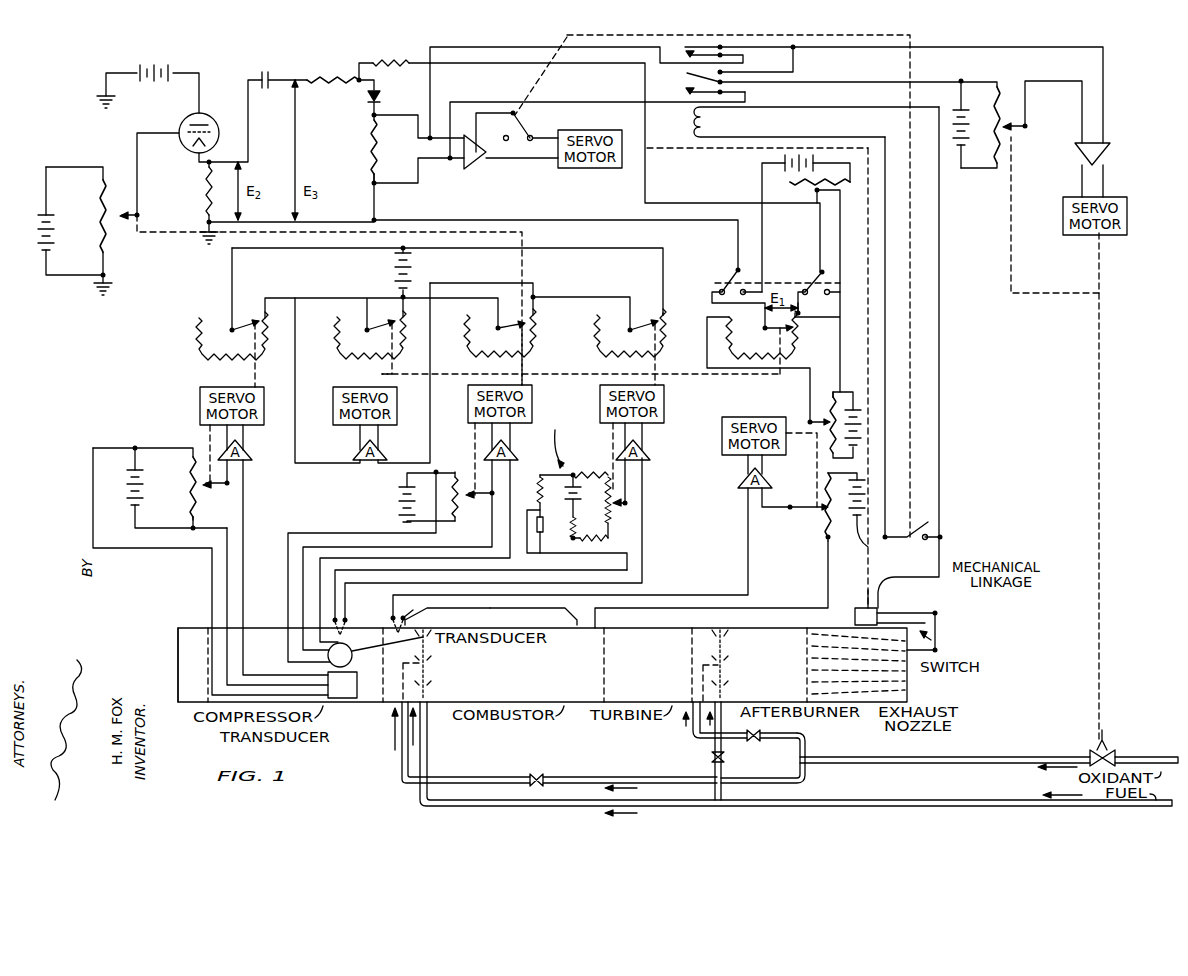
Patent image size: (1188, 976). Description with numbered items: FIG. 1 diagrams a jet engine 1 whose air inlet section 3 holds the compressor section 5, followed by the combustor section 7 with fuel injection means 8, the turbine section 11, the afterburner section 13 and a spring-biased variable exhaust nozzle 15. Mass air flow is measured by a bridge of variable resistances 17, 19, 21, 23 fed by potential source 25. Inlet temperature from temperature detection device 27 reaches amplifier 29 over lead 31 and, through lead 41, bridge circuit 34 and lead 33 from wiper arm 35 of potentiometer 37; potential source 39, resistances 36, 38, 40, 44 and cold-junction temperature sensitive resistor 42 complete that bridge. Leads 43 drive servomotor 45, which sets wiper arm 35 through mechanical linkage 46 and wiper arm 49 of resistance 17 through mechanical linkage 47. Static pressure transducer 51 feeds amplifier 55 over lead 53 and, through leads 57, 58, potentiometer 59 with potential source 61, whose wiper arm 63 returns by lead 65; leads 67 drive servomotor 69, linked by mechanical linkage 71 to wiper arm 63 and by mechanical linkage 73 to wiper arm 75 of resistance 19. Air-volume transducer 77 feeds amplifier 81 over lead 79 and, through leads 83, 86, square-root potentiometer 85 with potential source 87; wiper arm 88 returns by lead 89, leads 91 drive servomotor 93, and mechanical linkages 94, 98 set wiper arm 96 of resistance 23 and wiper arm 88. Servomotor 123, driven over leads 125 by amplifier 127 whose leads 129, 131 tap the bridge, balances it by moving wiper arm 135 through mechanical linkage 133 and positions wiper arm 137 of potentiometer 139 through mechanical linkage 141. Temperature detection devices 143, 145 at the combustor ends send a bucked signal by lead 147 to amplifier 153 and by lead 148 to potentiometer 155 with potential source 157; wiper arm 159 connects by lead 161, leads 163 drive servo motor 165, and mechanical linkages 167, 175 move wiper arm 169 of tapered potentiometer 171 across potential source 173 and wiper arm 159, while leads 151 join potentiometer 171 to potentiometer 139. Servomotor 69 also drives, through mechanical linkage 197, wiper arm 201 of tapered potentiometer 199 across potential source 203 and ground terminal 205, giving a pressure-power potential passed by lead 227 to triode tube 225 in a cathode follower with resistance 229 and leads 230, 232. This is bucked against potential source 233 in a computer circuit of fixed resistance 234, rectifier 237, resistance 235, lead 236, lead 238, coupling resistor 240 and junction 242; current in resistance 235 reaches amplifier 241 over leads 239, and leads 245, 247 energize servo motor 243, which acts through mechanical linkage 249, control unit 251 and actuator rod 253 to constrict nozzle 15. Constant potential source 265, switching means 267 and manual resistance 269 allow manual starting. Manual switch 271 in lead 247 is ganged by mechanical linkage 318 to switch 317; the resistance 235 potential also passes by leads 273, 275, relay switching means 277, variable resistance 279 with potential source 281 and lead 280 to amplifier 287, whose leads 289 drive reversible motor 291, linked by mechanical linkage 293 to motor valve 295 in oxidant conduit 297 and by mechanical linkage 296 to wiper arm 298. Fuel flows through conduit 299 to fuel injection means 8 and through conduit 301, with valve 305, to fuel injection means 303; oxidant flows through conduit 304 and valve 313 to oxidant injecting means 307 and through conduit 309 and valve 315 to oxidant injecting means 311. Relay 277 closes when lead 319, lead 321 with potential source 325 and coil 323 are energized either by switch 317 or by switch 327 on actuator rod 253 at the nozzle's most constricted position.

The jet engine 1 is at (694, 626).
The air inlet section 3 is at (195, 674).
The compressor section 5 is at (271, 674).
The combustor section 7 is at (527, 674).
The fuel injection means 8 is at (432, 657).
The turbine section 11 is at (647, 674).
The afterburner section 13 is at (789, 674).
The variable exhaust nozzle 15 is at (895, 648).
The variable resistance 17 is at (598, 350).
The variable resistance 19 is at (467, 350).
The variable resistance 21 is at (334, 350).
The variable resistance 23 is at (197, 351).
The potential source 25 is at (411, 260).
The temperature detection device 27 is at (347, 620).
The amplifier 29 is at (650, 456).
The lead 31 is at (642, 507).
The lead 33 is at (611, 504).
The bridge circuit 34 is at (566, 446).
The wiper arm 35 is at (620, 498).
The resistance 36 is at (543, 529).
The potentiometer 37 is at (577, 523).
The resistance 38 is at (582, 540).
The potential source 39 is at (573, 478).
The resistance 40 is at (590, 472).
The lead 41 is at (634, 550).
The temperature sensitive resistor 42 is at (577, 540).
The pair of leads 43 is at (641, 435).
The resistance 44 is at (540, 490).
The servomotor 45 is at (664, 385).
The mechanical linkage 46 is at (613, 450).
The mechanical linkage 47 is at (647, 358).
The wiper arm 49 is at (640, 332).
The resistance bridge strain gauge transducer 51 is at (350, 648).
The lead 53 is at (510, 480).
The amplifier 55 is at (515, 454).
The lead 57 is at (478, 547).
The lead 58 is at (383, 531).
The potentiometer 59 is at (478, 488).
The potential source 61 is at (407, 508).
The wiper arm 63 is at (458, 517).
The lead 65 is at (492, 495).
The pair of leads 67 is at (510, 435).
The servomotor 69 is at (532, 402).
The mechanical linkage 71 is at (475, 443).
The mechanical linkage 73 is at (522, 370).
The wiper arm 75 is at (509, 332).
The resistance bridge strain gauge transducer 77 is at (356, 672).
The lead 79 is at (243, 568).
The amplifier 81 is at (252, 457).
The lead 83 is at (226, 542).
The potentiometer 85 is at (189, 511).
The lead 86 is at (212, 600).
The potential source 87 is at (136, 512).
The wiper arm 88 is at (203, 502).
The lead 89 is at (228, 485).
The pair of leads 91 is at (245, 433).
The servomotor 93 is at (200, 398).
The mechanical linkage 94 is at (256, 369).
The wiper arm 96 is at (242, 335).
The mechanical linkage 98 is at (210, 426).
The servomotor 123 is at (344, 387).
The pair of leads 125 is at (360, 437).
The amplifier 127 is at (370, 473).
The lead 129 is at (295, 448).
The lead 131 is at (430, 450).
The mechanical linkage 133 is at (392, 368).
The wiper arm 135 is at (379, 335).
The wiper arm 137 is at (762, 342).
The potentiometer 139 is at (790, 352).
The mechanical linkage 141 is at (708, 376).
The temperature detection device 143 is at (406, 618).
The temperature detection device 145 is at (574, 618).
The lead 147 is at (748, 592).
The lead 148 is at (828, 593).
The leads 151 is at (840, 340).
The amplifier 153 is at (738, 489).
The potentiometer 155 is at (824, 539).
The potential source 157 is at (870, 549).
The wiper arm 159 is at (818, 512).
The lead 161 is at (753, 511).
The pair of leads 163 is at (747, 470).
The servo motor 165 is at (720, 417).
The mechanical linkage 167 is at (810, 434).
The wiper arm 169 is at (825, 423).
The potentiometer 171 is at (831, 396).
The potential source 173 is at (867, 384).
The mechanical linkage 175 is at (820, 490).
The mechanical linkage 197 is at (527, 233).
The tapered potentiometer 199 is at (115, 223).
The wiper arm 201 is at (128, 192).
The potential source 203 is at (44, 254).
The ground terminal 205 is at (98, 289).
The triode tube 225 is at (183, 143).
The lead 227 is at (137, 149).
The resistance 229 is at (204, 178).
The lead 230 is at (240, 222).
The lead 232 is at (248, 160).
The potential source 233 is at (256, 74).
The fixed resistance 234 is at (318, 72).
The resistance 235 is at (368, 162).
The lead 236 is at (602, 220).
The rectifier 237 is at (368, 98).
The lead 238 is at (526, 63).
The pair of leads 239 is at (377, 145).
The coupling resistor 240 is at (377, 61).
The amplifier 241 is at (472, 168).
The junction 242 is at (376, 81).
The servo motor 243 is at (576, 132).
The lead 245 is at (553, 163).
The lead 247 is at (481, 122).
The mechanical linkage 249 is at (870, 603).
The mechanical linkage unit 251 is at (855, 617).
The actuator rod 253 is at (920, 612).
The constant potential source 265 is at (782, 160).
The manually operated switching means 267 is at (828, 295).
The manually operated resistance 269 is at (806, 192).
The manually operated switch 271 is at (531, 134).
The lead 273 is at (494, 48).
The lead 275 is at (501, 96).
The relay switching means 277 is at (741, 56).
The variable resistance 279 is at (1005, 84).
The lead 280 is at (1038, 78).
The potential source 281 is at (962, 167).
The amplifier 287 is at (1110, 153).
The leads 289 is at (1103, 185).
The reversible motor 291 is at (1125, 218).
The mechanical linkage 293 is at (1092, 364).
The motor valve 295 is at (1095, 748).
The mechanical linkage 296 is at (1011, 261).
The conduit 297 is at (981, 754).
The wiper arm 298 is at (1018, 128).
The conduit 299 is at (981, 799).
The conduit 301 is at (713, 752).
The fuel injection means 303 is at (727, 657).
The conduit 304 is at (808, 778).
The valve 305 is at (724, 757).
The oxidant injecting means 307 is at (433, 673).
The conduit 309 is at (807, 742).
The oxidant injecting means 311 is at (728, 681).
The valve 313 is at (539, 777).
The valve 315 is at (758, 733).
The switch 317 is at (930, 547).
The mechanical linkage 318 is at (915, 36).
The lead 319 is at (940, 358).
The lead 321 is at (884, 138).
The coil 323 is at (702, 124).
The potential source 325 is at (870, 573).
The switch 327 is at (942, 634).